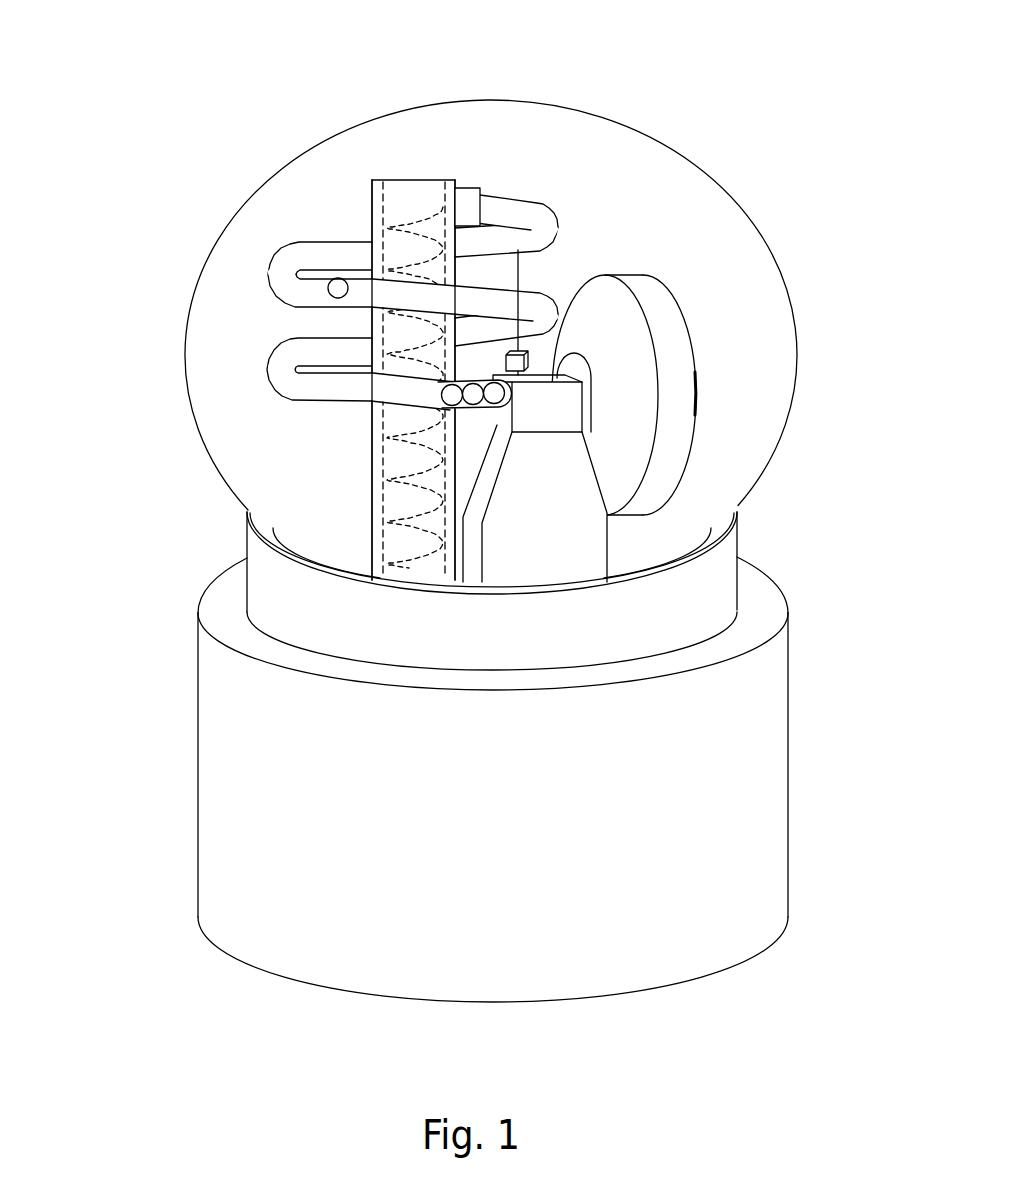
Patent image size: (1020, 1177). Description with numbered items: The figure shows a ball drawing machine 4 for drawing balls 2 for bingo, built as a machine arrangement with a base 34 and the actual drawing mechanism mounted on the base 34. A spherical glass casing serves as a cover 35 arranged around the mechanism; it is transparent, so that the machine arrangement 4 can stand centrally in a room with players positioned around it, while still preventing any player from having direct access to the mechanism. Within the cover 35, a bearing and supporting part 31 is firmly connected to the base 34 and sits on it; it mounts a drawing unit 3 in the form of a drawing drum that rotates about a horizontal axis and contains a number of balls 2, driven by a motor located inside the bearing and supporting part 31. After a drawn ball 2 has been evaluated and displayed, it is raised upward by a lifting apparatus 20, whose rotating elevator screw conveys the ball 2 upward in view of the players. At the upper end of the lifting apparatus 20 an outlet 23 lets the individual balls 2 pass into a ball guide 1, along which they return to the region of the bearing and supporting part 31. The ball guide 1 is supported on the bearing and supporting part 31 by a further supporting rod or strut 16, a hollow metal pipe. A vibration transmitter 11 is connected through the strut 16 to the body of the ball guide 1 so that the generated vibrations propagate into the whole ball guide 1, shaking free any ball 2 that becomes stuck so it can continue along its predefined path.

The ball drawing machine 4 is at (817, 170).
The cover 35 is at (192, 398).
The base 34 is at (150, 788).
The drawing unit 3 is at (690, 400).
The lifting apparatus 20 is at (405, 165).
The ball guide 1 is at (542, 222).
The outlet 23 is at (470, 205).
The strut 16 is at (520, 268).
The vibration transmitter 11 is at (528, 362).
The bearing and supporting part 31 is at (540, 475).
The balls 2 is at (330, 288).